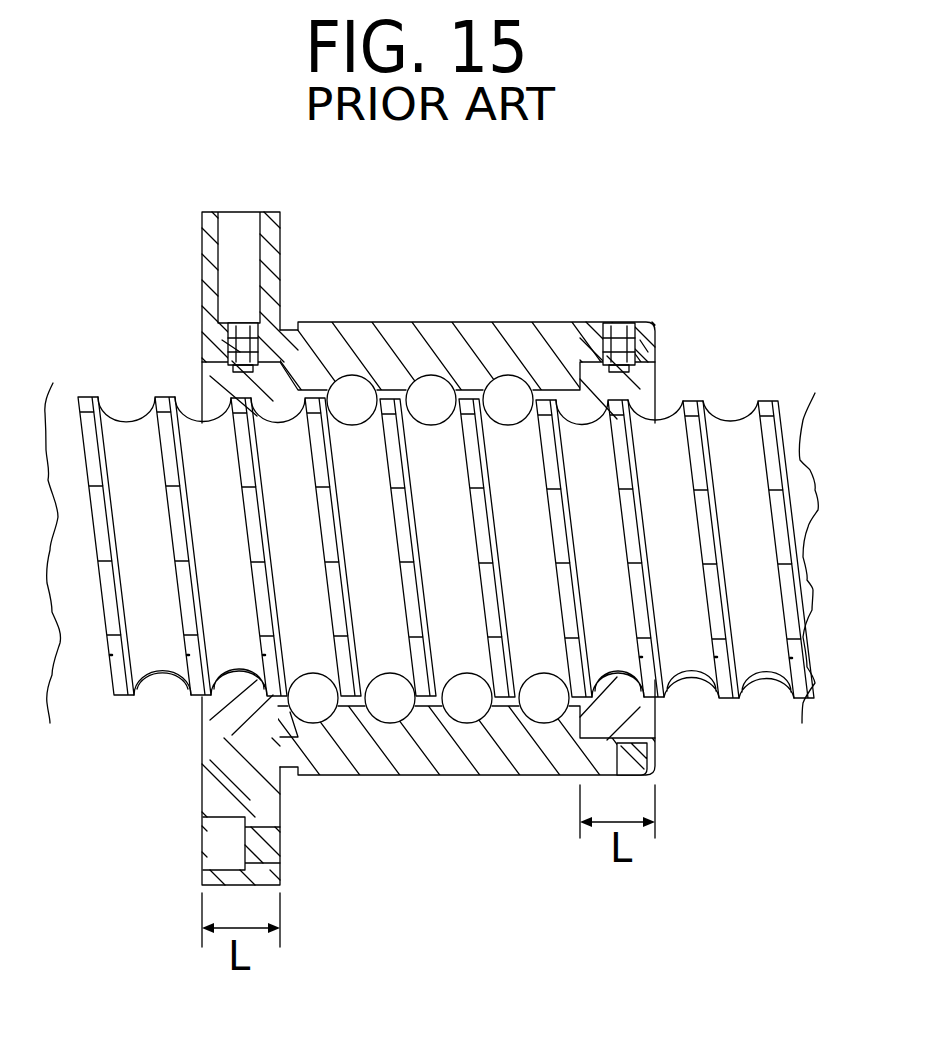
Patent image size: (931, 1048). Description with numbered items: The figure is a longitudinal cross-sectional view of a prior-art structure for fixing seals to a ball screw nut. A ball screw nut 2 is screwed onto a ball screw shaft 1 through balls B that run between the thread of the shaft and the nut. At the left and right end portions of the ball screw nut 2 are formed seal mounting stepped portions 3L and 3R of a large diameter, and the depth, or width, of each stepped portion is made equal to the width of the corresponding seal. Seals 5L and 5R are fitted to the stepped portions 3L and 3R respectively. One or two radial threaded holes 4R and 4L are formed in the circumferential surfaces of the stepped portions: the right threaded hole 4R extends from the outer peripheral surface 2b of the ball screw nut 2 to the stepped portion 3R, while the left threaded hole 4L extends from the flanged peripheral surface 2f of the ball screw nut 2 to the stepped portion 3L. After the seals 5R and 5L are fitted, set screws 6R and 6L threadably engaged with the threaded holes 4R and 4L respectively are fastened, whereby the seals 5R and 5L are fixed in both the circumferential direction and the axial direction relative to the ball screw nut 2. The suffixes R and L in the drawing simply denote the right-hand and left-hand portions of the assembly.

The ball screw shaft 1 is at (766, 602).
The ball screw nut 2 is at (488, 324).
The outer peripheral surface 2b is at (410, 322).
The flanged peripheral surface 2f is at (210, 212).
The seal mounting stepped portion 3L is at (224, 760).
The seal mounting stepped portion 3R is at (640, 762).
The threaded hole 4L is at (236, 350).
The threaded hole 4R is at (646, 345).
The seal 5L is at (210, 720).
The seal 5R is at (650, 385).
The set screw 6L is at (262, 330).
The set screw 6R is at (617, 325).
The balls B is at (470, 712).